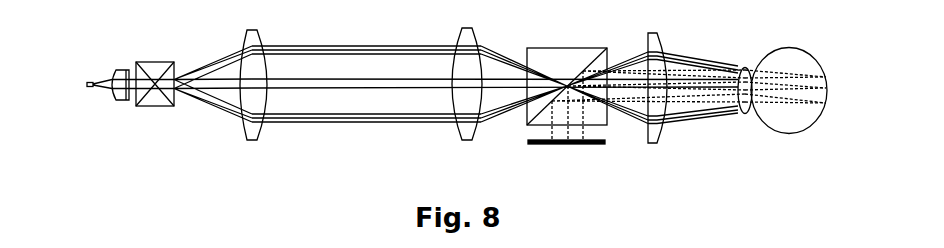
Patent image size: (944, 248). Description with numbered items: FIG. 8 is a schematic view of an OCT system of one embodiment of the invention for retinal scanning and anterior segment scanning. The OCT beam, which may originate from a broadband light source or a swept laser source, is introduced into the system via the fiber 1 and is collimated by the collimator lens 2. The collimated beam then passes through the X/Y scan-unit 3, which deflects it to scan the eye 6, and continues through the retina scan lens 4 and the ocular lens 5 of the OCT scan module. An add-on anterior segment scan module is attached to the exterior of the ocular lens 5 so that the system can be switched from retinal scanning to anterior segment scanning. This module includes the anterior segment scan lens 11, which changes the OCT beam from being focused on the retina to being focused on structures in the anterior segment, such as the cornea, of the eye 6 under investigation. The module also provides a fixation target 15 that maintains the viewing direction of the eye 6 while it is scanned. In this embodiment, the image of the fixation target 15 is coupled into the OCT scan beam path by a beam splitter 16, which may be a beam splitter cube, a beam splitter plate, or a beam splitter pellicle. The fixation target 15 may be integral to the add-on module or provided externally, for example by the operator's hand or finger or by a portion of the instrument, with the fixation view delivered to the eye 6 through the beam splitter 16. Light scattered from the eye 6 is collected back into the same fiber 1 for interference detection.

The fiber 1 is at (90, 99).
The collimator lens 2 is at (120, 102).
The X/Y scan-unit 3 is at (155, 98).
The retina scan lens 4 is at (253, 100).
The ocular lens 5 is at (467, 99).
The beam splitter 16 is at (567, 78).
The fixation target 15 is at (558, 142).
The anterior segment scan lens 11 is at (655, 100).
The eye 6 is at (782, 109).